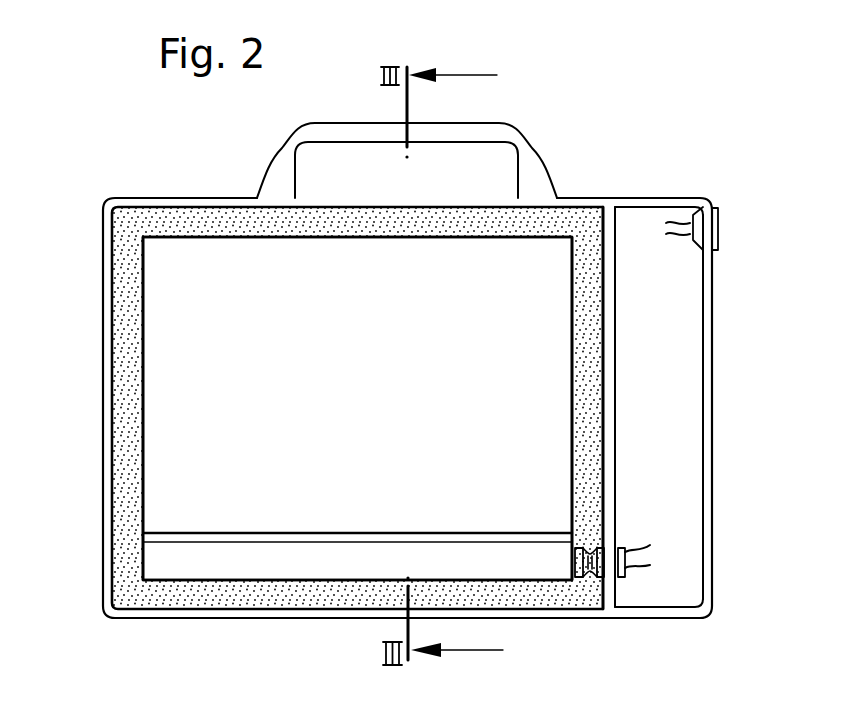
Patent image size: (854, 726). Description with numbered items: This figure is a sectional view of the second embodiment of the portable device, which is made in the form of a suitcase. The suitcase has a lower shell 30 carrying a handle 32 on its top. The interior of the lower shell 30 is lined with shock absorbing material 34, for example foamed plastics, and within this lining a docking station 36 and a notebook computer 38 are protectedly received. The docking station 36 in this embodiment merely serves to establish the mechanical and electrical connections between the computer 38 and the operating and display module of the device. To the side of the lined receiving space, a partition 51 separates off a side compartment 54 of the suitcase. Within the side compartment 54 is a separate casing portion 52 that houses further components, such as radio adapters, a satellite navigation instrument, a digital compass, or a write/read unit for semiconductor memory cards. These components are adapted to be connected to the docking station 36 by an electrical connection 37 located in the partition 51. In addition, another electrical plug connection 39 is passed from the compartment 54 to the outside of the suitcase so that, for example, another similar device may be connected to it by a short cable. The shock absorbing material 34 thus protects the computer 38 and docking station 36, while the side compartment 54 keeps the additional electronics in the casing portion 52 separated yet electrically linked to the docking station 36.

The lower shell 30 is at (98, 469).
The handle 32 is at (508, 132).
The shock absorbing material 34 is at (125, 360).
The docking station 36 is at (297, 566).
The electrical connection 37 is at (622, 578).
The notebook computer 38 is at (370, 386).
The electrical plug connection 39 is at (719, 232).
The partition 51 is at (608, 302).
The casing portion 52 is at (707, 480).
The side compartment 54 is at (682, 372).